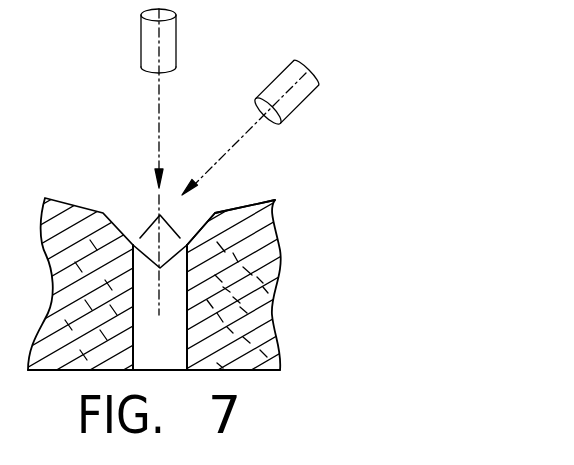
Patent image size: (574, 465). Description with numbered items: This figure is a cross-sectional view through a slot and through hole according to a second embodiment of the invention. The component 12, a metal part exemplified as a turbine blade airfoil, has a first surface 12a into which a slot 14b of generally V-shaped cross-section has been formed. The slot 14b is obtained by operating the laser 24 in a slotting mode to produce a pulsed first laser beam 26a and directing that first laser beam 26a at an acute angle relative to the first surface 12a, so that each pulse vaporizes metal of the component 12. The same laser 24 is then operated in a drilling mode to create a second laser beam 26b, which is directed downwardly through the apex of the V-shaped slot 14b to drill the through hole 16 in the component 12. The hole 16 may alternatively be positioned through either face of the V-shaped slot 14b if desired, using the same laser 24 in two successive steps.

The component 12 is at (276, 252).
The first surface 12a is at (245, 203).
The slot 14b is at (133, 243).
The through hole 16 is at (177, 350).
The laser 24 is at (293, 62).
The first laser beam 26a is at (244, 134).
The second laser beam 26b is at (159, 116).